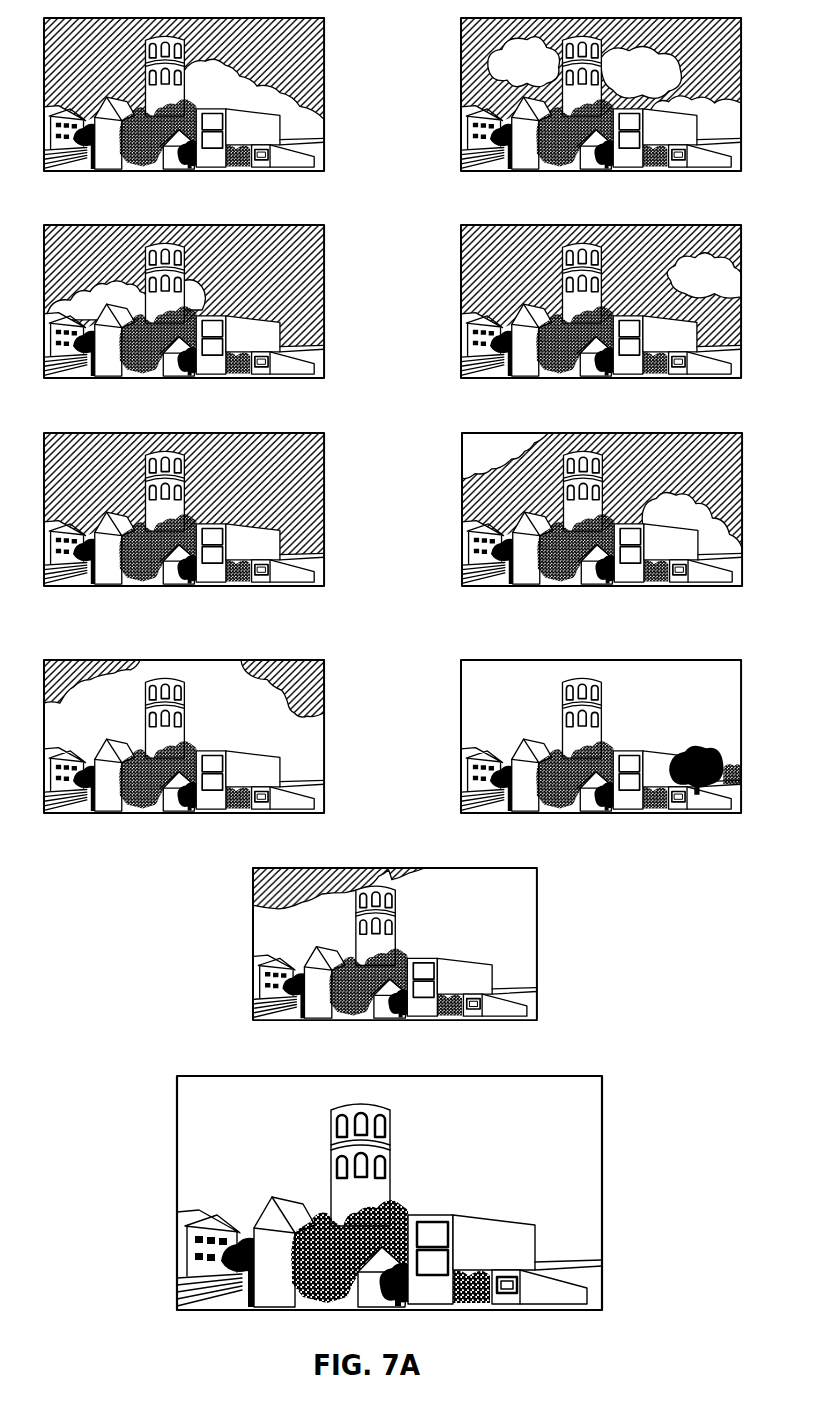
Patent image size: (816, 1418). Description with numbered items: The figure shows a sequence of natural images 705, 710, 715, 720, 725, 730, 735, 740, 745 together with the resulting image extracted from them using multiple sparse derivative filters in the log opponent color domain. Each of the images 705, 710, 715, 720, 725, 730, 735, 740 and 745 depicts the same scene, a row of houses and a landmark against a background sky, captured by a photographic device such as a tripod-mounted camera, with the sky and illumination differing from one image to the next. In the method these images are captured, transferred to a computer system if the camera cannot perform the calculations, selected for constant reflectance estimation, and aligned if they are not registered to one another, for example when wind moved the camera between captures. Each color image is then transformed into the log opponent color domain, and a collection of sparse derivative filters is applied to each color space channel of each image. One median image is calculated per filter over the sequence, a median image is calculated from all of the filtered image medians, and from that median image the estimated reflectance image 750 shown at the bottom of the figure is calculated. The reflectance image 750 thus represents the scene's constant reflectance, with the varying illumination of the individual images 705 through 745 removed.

The image 705 is at (177, 172).
The image 710 is at (612, 172).
The image 715 is at (177, 378).
The image 720 is at (612, 378).
The image 725 is at (177, 586).
The image 730 is at (612, 586).
The image 735 is at (177, 813).
The image 740 is at (618, 812).
The image 745 is at (390, 1021).
The estimated reflectance image 750 is at (408, 1310).